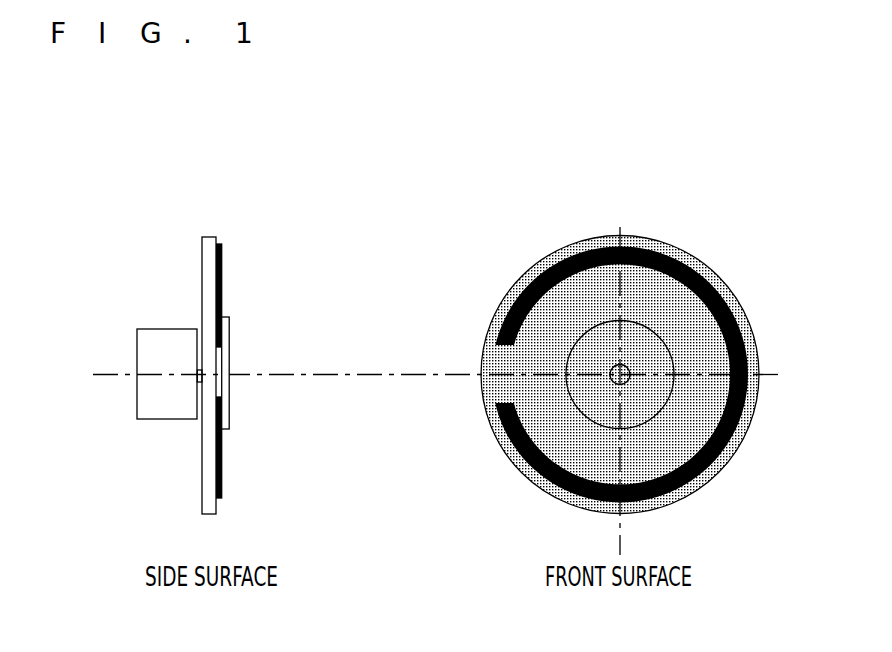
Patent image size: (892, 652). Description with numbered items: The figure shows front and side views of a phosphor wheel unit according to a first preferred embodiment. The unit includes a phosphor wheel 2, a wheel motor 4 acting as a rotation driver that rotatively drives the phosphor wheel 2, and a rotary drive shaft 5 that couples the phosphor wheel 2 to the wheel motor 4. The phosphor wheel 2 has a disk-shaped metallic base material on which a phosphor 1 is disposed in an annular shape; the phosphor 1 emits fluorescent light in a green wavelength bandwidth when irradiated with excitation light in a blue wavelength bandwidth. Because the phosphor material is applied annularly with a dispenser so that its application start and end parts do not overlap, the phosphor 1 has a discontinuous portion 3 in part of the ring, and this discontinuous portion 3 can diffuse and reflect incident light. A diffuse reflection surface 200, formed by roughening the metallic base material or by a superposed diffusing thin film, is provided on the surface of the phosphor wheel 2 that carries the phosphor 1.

The phosphor 1 is at (222, 279).
The phosphor wheel 2 is at (202, 258).
The discontinuous portion 3 is at (220, 363).
The wheel motor 4 is at (148, 400).
The rotary drive shaft 5 is at (197, 374).
The diffuse reflection surface 200 is at (537, 468).